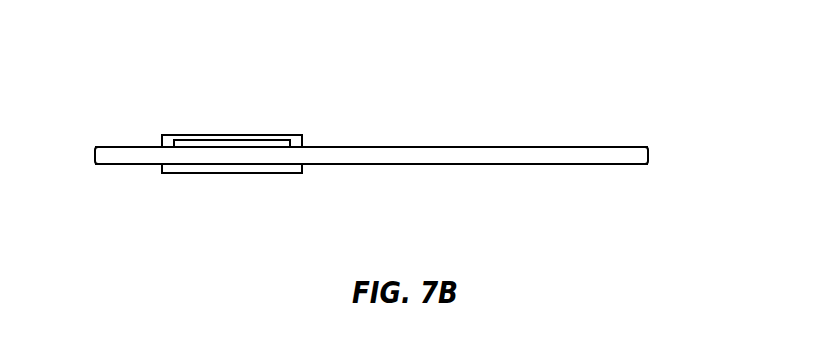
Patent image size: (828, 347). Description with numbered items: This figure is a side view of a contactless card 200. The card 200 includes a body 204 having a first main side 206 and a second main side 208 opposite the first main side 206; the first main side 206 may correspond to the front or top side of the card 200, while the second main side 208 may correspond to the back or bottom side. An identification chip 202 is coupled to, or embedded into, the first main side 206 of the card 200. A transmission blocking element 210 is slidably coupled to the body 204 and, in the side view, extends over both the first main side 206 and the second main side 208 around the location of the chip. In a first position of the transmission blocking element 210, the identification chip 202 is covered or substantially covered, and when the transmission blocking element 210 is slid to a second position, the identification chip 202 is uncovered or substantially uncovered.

The contactless card 200 is at (96, 100).
The identification chip 202 is at (207, 144).
The body 204 is at (418, 137).
The first main side 206 is at (578, 146).
The second main side 208 is at (553, 165).
The transmission blocking element 210 is at (296, 137).